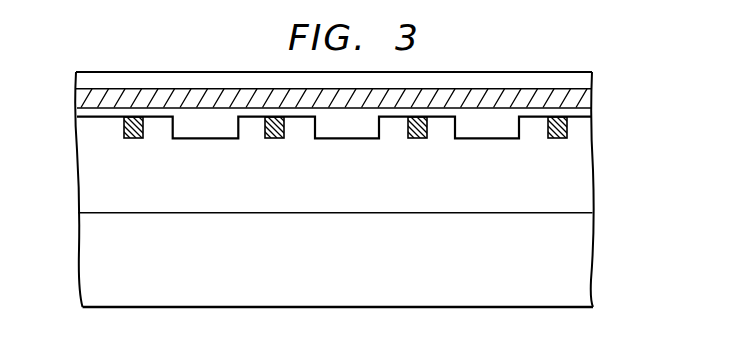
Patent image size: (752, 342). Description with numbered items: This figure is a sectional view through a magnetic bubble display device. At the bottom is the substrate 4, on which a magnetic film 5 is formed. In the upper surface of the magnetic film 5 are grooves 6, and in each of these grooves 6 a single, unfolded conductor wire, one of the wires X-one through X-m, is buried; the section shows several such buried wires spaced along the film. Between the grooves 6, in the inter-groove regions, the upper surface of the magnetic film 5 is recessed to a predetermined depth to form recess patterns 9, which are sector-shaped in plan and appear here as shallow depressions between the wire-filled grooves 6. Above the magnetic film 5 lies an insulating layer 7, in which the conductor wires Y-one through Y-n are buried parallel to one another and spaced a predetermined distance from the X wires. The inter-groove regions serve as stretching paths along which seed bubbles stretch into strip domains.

The insulating layer 7 is at (580, 82).
The magnetic film 5 is at (585, 172).
The substrate 4 is at (585, 244).
The recess pattern 9 is at (210, 132).
The groove 6 is at (134, 139).